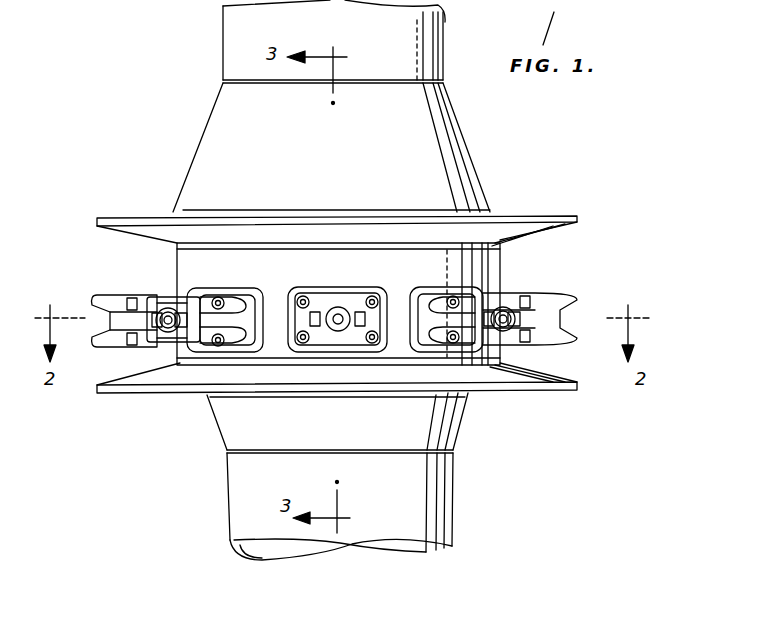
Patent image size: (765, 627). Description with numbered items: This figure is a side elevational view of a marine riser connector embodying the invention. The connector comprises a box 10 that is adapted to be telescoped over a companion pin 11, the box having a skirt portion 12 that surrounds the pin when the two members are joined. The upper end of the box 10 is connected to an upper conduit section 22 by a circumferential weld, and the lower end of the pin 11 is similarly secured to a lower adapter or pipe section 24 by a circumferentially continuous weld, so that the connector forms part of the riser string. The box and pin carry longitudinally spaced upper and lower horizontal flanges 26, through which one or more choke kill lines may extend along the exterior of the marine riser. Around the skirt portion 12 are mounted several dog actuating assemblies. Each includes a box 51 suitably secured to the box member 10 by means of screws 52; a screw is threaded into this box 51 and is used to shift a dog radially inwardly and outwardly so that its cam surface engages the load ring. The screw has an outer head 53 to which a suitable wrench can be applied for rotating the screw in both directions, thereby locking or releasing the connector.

The box 10 is at (197, 140).
The pin 11 is at (210, 423).
The skirt portion 12 is at (180, 256).
The upper conduit section 22 is at (237, 30).
The lower adapter or pipe section 24 is at (240, 513).
The upper and lower horizontal flanges 26 is at (560, 231).
The box 51 is at (205, 303).
The screws 52 is at (224, 307).
The outer head 53 is at (165, 327).